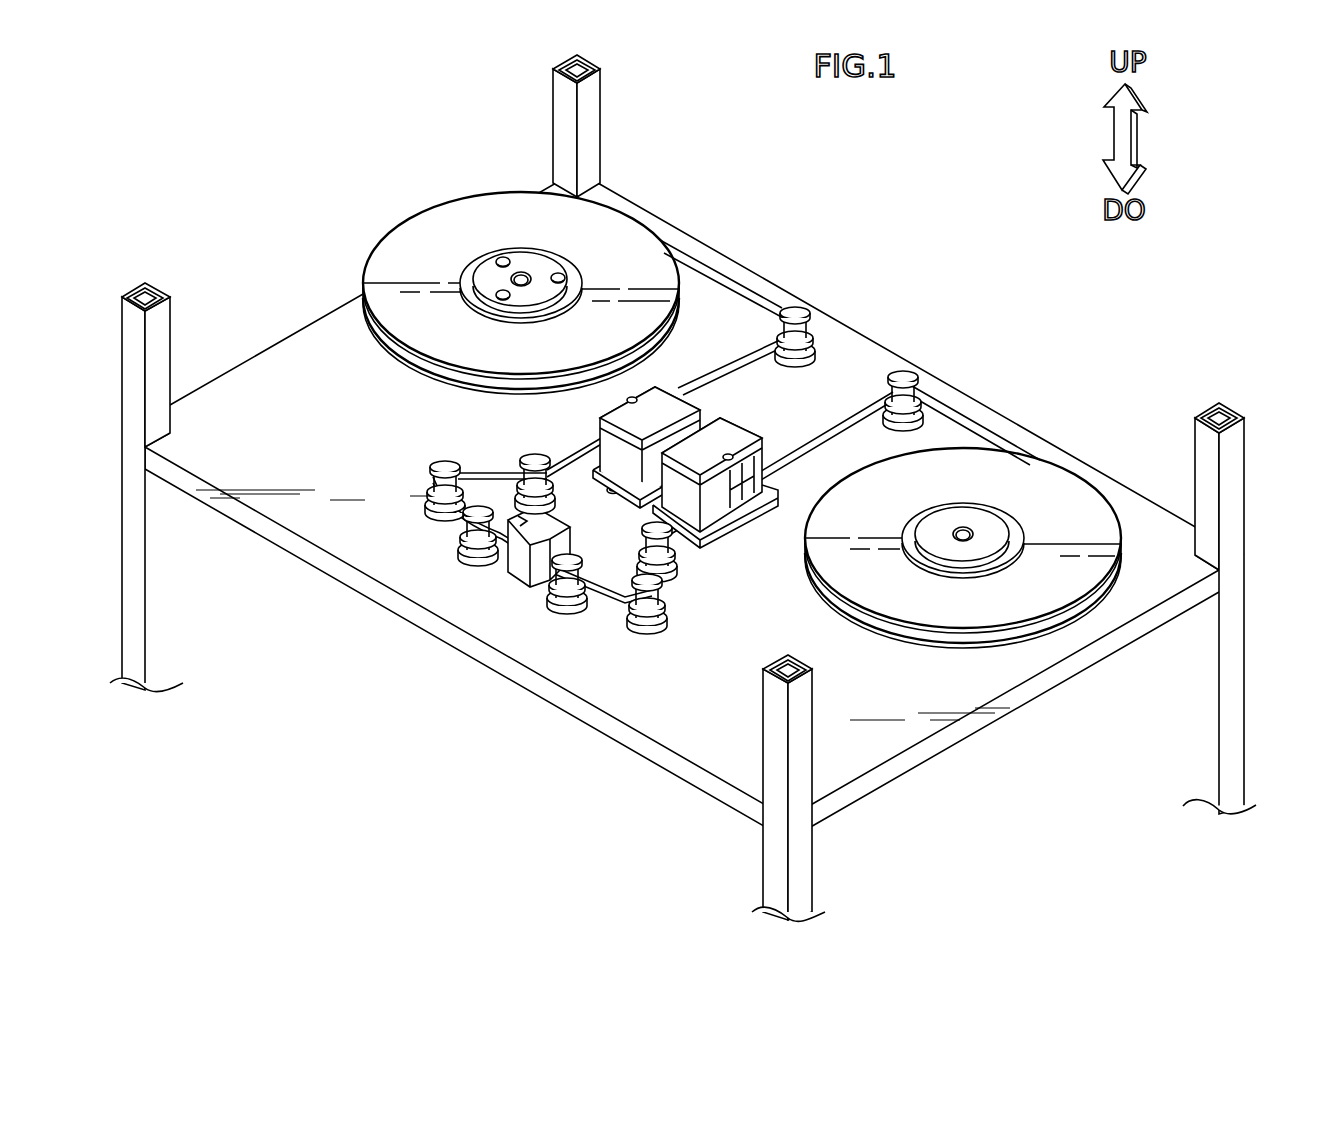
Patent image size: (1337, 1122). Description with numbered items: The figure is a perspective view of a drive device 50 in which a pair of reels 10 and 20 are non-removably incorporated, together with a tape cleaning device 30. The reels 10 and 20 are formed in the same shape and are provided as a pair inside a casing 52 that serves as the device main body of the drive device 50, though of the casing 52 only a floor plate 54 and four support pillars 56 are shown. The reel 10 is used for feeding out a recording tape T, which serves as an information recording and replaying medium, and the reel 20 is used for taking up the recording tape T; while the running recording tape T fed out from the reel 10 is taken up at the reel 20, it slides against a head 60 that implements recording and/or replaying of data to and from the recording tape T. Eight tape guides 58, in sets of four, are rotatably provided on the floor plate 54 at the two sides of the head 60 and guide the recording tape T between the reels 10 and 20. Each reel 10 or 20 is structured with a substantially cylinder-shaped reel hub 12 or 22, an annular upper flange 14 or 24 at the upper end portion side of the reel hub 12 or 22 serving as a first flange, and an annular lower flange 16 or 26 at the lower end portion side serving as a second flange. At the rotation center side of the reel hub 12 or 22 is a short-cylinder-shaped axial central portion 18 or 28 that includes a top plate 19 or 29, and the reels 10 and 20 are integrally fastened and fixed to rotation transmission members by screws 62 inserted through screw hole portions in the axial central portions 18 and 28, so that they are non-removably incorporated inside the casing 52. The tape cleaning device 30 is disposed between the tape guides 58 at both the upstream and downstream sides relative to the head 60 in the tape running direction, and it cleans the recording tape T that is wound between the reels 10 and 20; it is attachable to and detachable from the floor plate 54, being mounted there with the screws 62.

The reel 10 is at (425, 203).
The reel hub 12 is at (487, 247).
The upper flange 14 is at (400, 255).
The lower flange 16 is at (385, 360).
The axial central portion 18 is at (545, 268).
The top plate 19 is at (530, 296).
The reel 20 is at (1070, 466).
The reel hub 22 is at (985, 508).
The upper flange 24 is at (1090, 510).
The lower flange 26 is at (1062, 636).
The axial central portion 28 is at (972, 548).
The top plate 29 is at (990, 530).
The tape cleaning device 30 is at (668, 385).
The drive device 50 is at (192, 250).
The casing 52 is at (372, 603).
The floor plate 54 is at (663, 713).
The support pillars 56 is at (562, 128).
The tape guides 58 is at (795, 312).
The head 60 is at (515, 583).
The screws 62 is at (562, 277).
The recording tape T is at (733, 285).